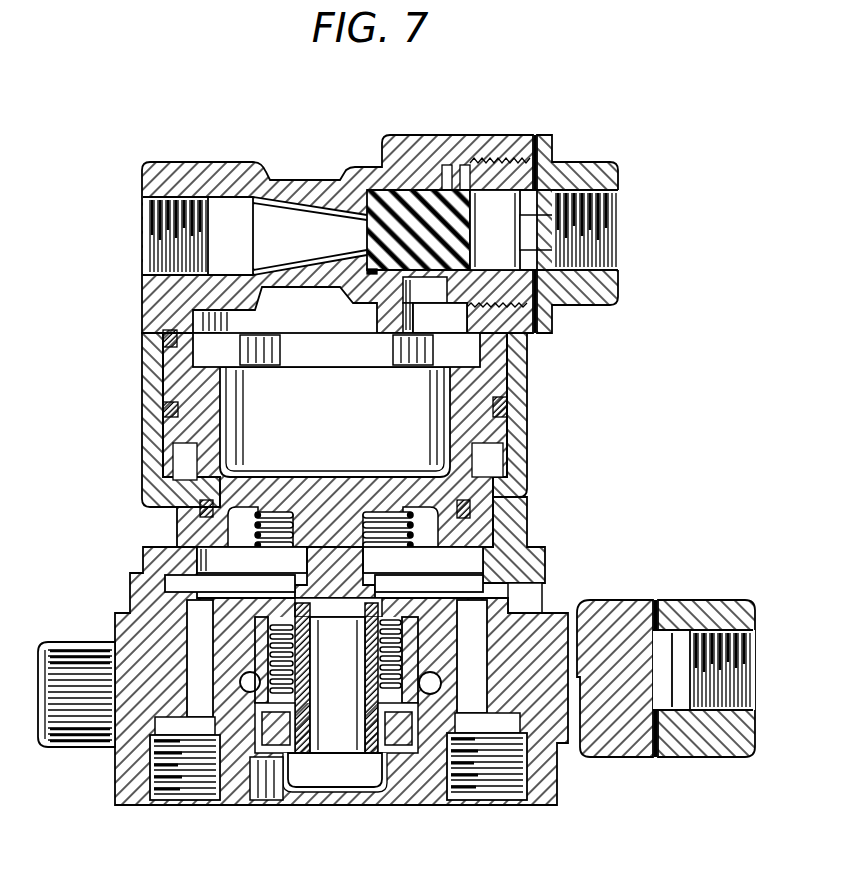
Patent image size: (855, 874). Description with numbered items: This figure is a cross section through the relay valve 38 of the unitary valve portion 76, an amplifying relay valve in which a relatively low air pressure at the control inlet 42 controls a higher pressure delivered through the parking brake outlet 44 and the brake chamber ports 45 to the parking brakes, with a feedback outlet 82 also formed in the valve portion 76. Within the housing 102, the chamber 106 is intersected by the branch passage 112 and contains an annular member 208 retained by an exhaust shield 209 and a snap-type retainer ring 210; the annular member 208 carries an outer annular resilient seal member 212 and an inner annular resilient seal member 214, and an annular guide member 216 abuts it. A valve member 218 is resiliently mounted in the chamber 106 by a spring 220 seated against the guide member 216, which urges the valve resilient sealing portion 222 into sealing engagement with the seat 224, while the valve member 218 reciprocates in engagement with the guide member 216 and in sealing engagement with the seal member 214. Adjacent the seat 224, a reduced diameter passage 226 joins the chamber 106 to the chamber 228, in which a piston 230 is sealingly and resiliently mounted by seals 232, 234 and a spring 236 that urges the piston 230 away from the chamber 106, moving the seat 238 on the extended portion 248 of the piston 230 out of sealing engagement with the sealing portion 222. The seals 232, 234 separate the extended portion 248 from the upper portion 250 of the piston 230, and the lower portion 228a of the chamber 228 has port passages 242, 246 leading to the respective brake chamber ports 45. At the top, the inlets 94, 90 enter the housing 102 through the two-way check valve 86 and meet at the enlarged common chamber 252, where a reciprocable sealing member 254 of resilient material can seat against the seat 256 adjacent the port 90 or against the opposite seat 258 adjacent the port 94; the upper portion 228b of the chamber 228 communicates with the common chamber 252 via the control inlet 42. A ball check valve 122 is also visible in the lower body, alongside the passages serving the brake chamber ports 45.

The relay valve 38 is at (127, 453).
The control inlet 42 is at (463, 328).
The parking brake outlet 44 is at (525, 598).
The brake chamber port 45 is at (215, 800).
The valve portion 76 is at (601, 146).
The feedback outlet 82 is at (59, 747).
The two-way check valve 86 is at (383, 180).
The inlet 90 is at (620, 266).
The inlet 94 is at (148, 266).
The housing 102 is at (448, 134).
The chamber 106 is at (403, 637).
The branch passage 112 is at (441, 684).
The ball check valve 122 is at (240, 684).
The annular member 208 is at (304, 753).
The exhaust shield 209 is at (292, 797).
The snap-type retainer ring 210 is at (258, 800).
The outer annular resilient seal member 212 is at (260, 722).
The inner annular resilient seal member 214 is at (305, 730).
The annular guide member 216 is at (439, 693).
The valve member 218 is at (370, 700).
The spring 220 is at (275, 655).
The valve resilient sealing portion 222 is at (268, 629).
The seat 224 is at (403, 608).
The reduced diameter passage 226 is at (313, 578).
The chamber 228 is at (211, 558).
The lower portion of chamber 228a is at (483, 556).
The upper portion of chamber 228b is at (437, 388).
The piston 230 is at (456, 429).
The seal 232 is at (508, 408).
The seal 234 is at (473, 516).
The spring 236 is at (407, 516).
The seat 238 is at (358, 590).
The port passage 242 is at (483, 660).
The port passage 246 is at (184, 654).
The extended portion of piston 248 is at (323, 532).
The upper portion of piston 250 is at (167, 387).
The enlarged common chamber 252 is at (488, 283).
The reciprocable sealing member 254 is at (411, 190).
The seat 256 is at (513, 306).
The seat 258 is at (366, 272).